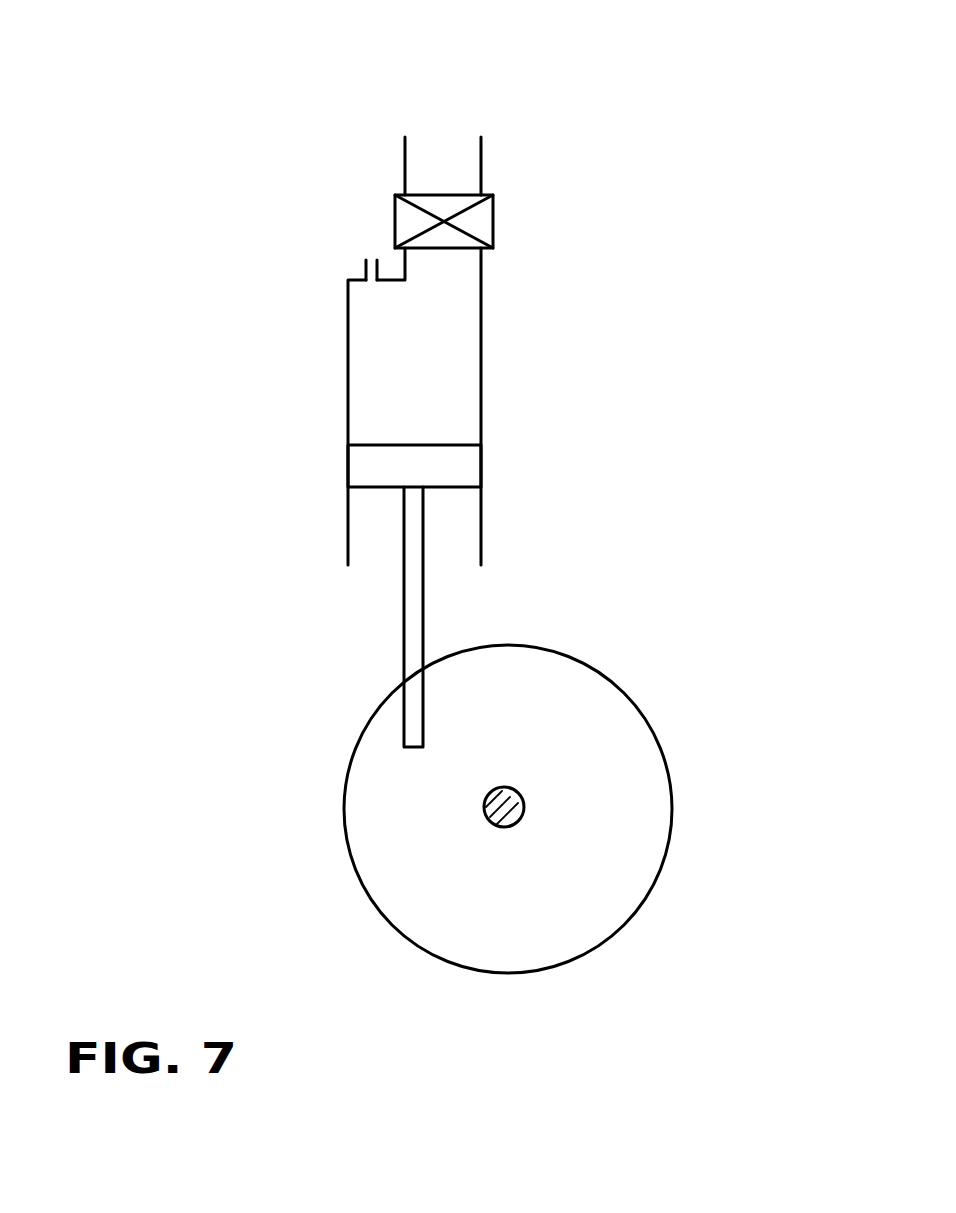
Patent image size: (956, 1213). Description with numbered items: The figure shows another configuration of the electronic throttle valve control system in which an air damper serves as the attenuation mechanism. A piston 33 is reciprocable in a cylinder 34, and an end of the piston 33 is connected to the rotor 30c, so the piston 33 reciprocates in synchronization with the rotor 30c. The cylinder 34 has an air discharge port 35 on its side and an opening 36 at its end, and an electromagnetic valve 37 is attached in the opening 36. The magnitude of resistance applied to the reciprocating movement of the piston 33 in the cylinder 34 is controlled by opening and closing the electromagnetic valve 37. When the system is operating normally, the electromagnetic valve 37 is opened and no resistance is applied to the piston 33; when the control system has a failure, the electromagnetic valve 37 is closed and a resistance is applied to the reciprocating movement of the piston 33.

The opening 36 is at (446, 148).
The electromagnetic valve 37 is at (493, 222).
The cylinder 34 is at (481, 372).
The air discharge port 35 is at (370, 254).
The piston 33 is at (427, 603).
The rotor 30c is at (645, 902).